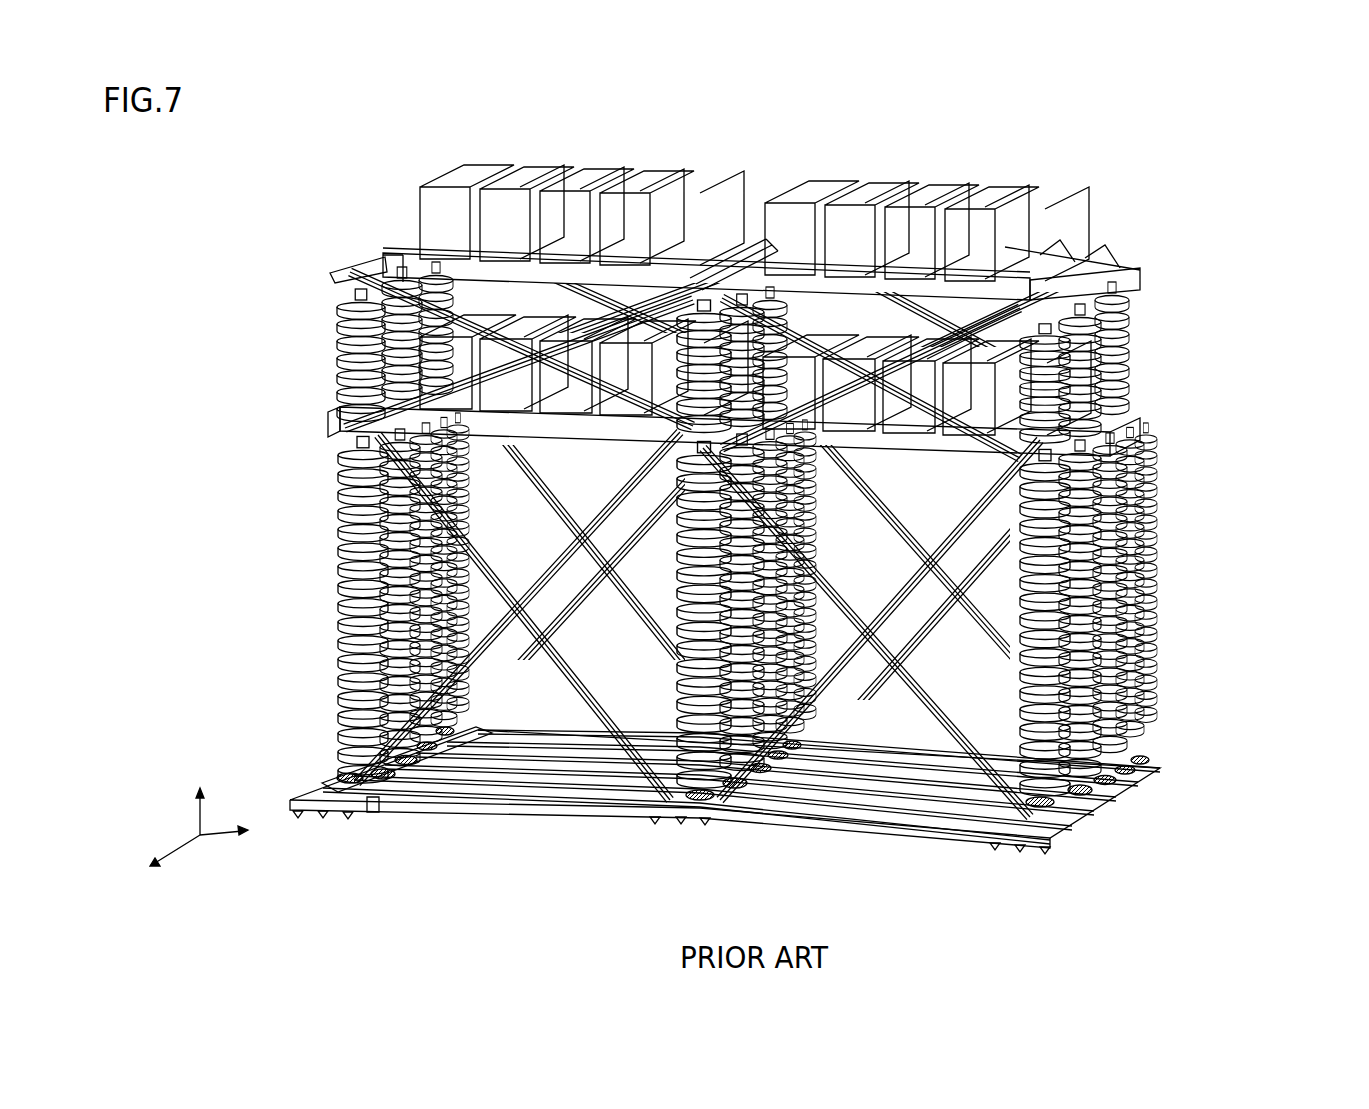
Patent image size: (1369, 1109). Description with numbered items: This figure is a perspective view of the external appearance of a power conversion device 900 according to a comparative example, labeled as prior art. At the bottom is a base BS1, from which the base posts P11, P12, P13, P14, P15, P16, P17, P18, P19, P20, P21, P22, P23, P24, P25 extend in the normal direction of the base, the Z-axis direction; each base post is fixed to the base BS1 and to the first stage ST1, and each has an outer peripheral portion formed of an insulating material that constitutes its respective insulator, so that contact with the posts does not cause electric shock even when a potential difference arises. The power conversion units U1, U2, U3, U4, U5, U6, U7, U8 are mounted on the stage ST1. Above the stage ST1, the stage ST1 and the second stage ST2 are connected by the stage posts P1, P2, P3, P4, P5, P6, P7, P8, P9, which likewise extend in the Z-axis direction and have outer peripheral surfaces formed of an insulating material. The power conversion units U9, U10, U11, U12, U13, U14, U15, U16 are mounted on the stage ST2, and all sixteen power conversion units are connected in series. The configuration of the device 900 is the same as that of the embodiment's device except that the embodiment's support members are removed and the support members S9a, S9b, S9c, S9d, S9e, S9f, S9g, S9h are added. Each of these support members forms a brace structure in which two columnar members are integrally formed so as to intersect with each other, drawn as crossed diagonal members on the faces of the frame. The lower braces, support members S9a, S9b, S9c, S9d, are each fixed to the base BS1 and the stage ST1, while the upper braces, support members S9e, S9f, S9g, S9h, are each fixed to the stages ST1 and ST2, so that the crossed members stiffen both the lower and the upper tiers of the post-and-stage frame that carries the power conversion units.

The power conversion device 900 is at (268, 116).
The base BS1 is at (970, 828).
The stage ST1 is at (1128, 430).
The stage ST2 is at (1117, 273).
The support member S9a is at (480, 565).
The support member S9b is at (935, 745).
The support member S9c is at (485, 510).
The support member S9d is at (990, 605).
The support member S9e is at (545, 335).
The support member S9f is at (820, 318).
The support member S9g is at (600, 300).
The support member S9h is at (948, 310).
The power conversion unit U1 is at (462, 395).
The power conversion unit U2 is at (522, 402).
The power conversion unit U3 is at (585, 408).
The power conversion unit U4 is at (640, 410).
The power conversion unit U5 is at (808, 405).
The power conversion unit U6 is at (868, 405).
The power conversion unit U7 is at (928, 405).
The power conversion unit U8 is at (985, 405).
The power conversion unit U9 is at (466, 178).
The power conversion unit U10 is at (522, 180).
The power conversion unit U11 is at (584, 183).
The power conversion unit U12 is at (644, 186).
The power conversion unit U13 is at (820, 200).
The power conversion unit U14 is at (880, 203).
The power conversion unit U15 is at (940, 205).
The power conversion unit U16 is at (1000, 208).
The stage post P1 is at (340, 386).
The stage post P2 is at (352, 352).
The stage post P3 is at (372, 306).
The stage post P4 is at (700, 308).
The stage post P5 is at (740, 305).
The stage post P6 is at (773, 298).
The stage post P7 is at (1068, 368).
The stage post P8 is at (1090, 338).
The stage post P9 is at (1125, 313).
The base post P11 is at (340, 748).
The base post P12 is at (405, 745).
The base post P13 is at (440, 715).
The base post P14 is at (450, 745).
The base post P15 is at (455, 705).
The base post P16 is at (690, 785).
The base post P17 is at (712, 800).
The base post P18 is at (758, 735).
The base post P19 is at (797, 740).
The base post P20 is at (845, 745).
The base post P21 is at (1072, 808).
The base post P22 is at (1095, 793).
The base post P23 is at (1108, 782).
The base post P24 is at (1120, 768).
The base post P25 is at (1135, 755).